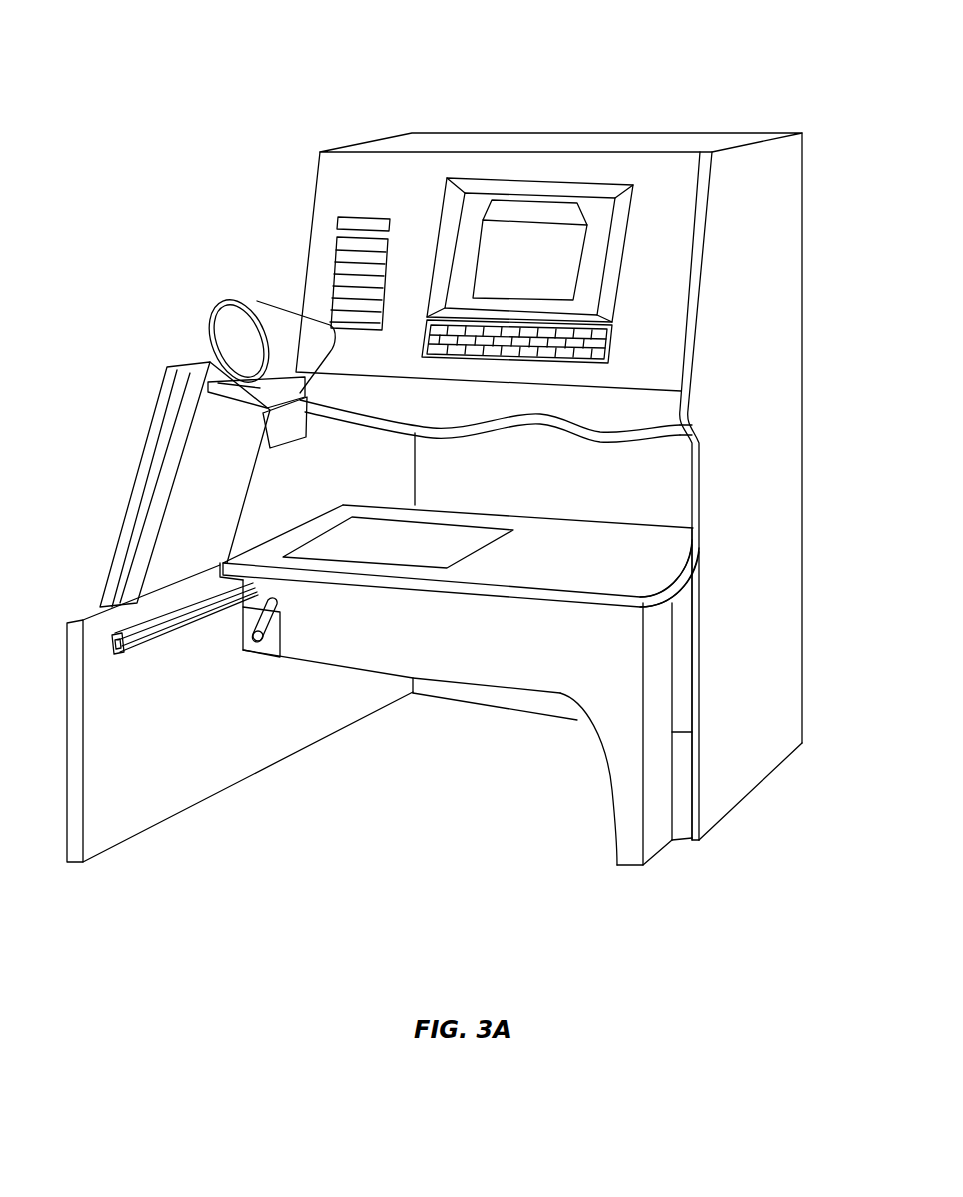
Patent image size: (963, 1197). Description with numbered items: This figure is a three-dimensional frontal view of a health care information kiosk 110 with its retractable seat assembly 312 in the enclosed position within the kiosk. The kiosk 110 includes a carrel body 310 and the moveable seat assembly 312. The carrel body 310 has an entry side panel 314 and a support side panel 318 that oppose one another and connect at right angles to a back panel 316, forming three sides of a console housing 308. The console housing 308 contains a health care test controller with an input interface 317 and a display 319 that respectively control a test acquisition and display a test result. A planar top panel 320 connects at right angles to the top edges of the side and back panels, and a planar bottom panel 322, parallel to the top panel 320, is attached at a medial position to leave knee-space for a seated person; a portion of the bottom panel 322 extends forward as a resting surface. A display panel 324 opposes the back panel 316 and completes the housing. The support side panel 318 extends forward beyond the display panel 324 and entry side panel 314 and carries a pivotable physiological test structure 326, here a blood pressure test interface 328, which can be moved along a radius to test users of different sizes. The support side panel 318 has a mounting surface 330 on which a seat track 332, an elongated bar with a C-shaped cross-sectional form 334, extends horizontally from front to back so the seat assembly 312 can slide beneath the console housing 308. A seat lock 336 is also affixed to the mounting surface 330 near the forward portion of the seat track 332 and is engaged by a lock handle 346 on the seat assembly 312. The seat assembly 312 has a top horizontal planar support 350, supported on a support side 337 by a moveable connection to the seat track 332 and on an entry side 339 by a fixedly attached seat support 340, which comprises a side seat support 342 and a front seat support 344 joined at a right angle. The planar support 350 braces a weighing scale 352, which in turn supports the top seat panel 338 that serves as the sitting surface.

The health care information kiosk 110 is at (205, 45).
The console housing 308 is at (803, 233).
The carrel body 310 is at (782, 361).
The retractable seat assembly 312 is at (665, 641).
The entry side panel 314 is at (695, 671).
The back panel 316 is at (578, 131).
The input interface 317 is at (588, 344).
The support side panel 318 is at (85, 671).
The display 319 is at (565, 252).
The top panel 320 is at (462, 131).
The bottom panel 322 is at (518, 429).
The display panel 324 is at (688, 171).
The physiological test structure 326 is at (248, 343).
The blood pressure test interface 328 is at (315, 346).
The mounting surface 330 is at (108, 621).
The seat track 332 is at (140, 646).
The C-shaped cross-sectional form 334 is at (124, 659).
The seat lock 336 is at (270, 639).
The support side 337 is at (352, 700).
The top seat panel 338 is at (450, 525).
The entry side 339 is at (676, 590).
The seat support 340 is at (660, 706).
The side seat support 342 is at (652, 847).
The front seat support 344 is at (631, 857).
The lock handle 346 is at (278, 606).
The top horizontal planar support 350 is at (672, 551).
The weighing scale 352 is at (478, 552).